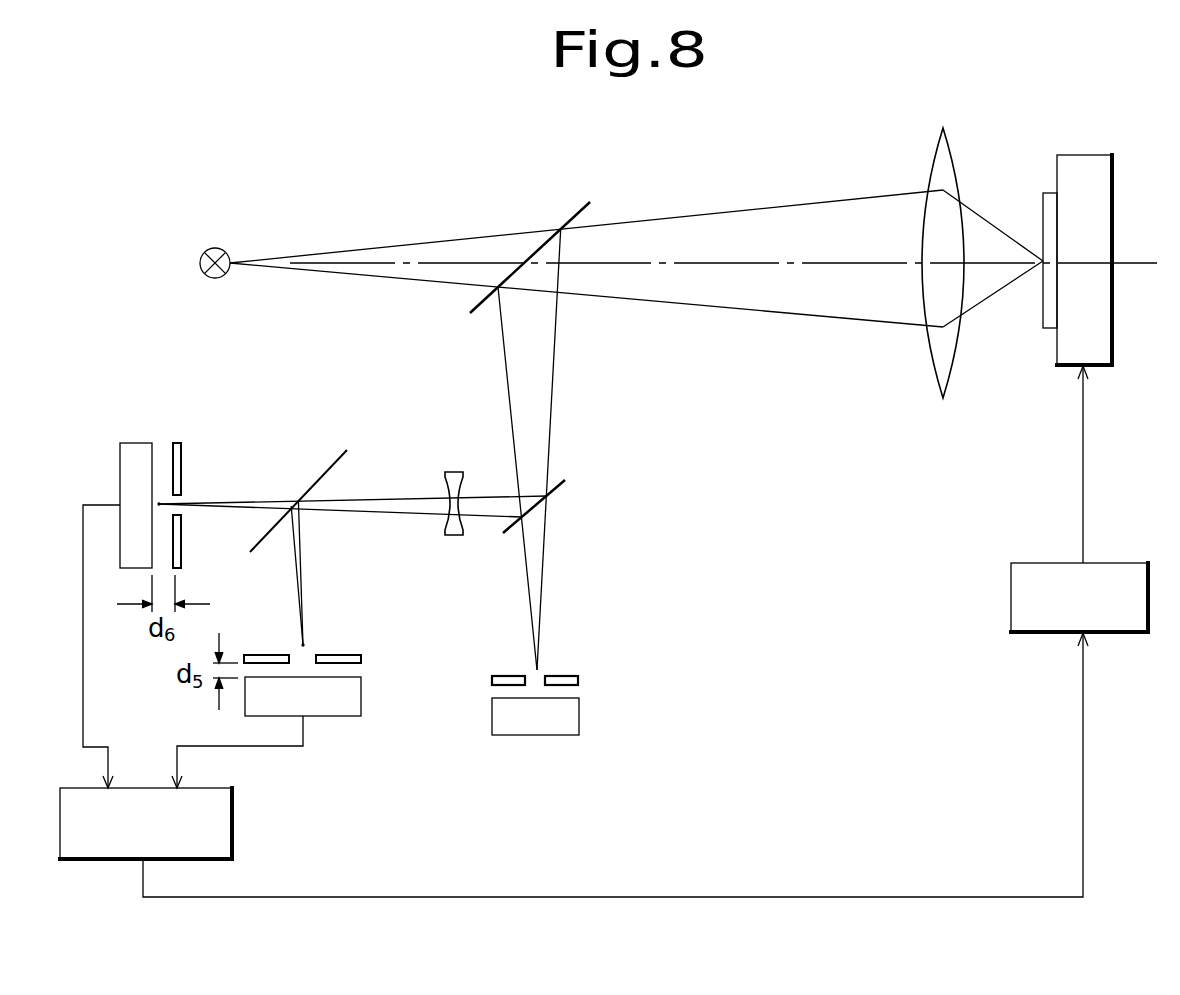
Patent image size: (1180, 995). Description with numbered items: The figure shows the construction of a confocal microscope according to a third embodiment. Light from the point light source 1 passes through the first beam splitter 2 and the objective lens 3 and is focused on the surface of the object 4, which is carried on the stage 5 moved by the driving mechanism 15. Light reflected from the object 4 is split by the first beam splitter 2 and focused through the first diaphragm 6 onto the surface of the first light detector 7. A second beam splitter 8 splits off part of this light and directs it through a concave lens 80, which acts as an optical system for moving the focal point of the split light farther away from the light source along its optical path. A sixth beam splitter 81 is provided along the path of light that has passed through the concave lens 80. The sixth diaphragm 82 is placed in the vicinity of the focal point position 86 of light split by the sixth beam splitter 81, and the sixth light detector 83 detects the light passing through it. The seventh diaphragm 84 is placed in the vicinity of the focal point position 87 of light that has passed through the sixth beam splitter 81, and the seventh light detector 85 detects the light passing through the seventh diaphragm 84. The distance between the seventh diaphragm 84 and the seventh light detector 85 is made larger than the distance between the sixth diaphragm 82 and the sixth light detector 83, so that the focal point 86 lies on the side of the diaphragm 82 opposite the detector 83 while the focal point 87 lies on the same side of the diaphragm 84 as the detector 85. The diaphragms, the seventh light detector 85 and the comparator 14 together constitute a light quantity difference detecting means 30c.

The point light source 1 is at (213, 248).
The first beam splitter 2 is at (580, 210).
The objective lens 3 is at (935, 147).
The object 4 is at (1043, 202).
The stage 5 is at (1057, 168).
The first diaphragm 6 is at (573, 674).
The first light detector 7 is at (579, 722).
The second beam splitter 8 is at (548, 493).
The comparator 14 is at (232, 840).
The driving mechanism 15 is at (1011, 606).
The light quantity difference detecting means 30c is at (318, 740).
The concave lens 80 is at (454, 470).
The sixth beam splitter 81 is at (336, 460).
The sixth diaphragm 82 is at (362, 660).
The sixth light detector 83 is at (362, 705).
The seventh diaphragm 84 is at (182, 452).
The seventh light detector 85 is at (134, 443).
The focal point position 86 is at (305, 647).
The focal point position 87 is at (165, 498).